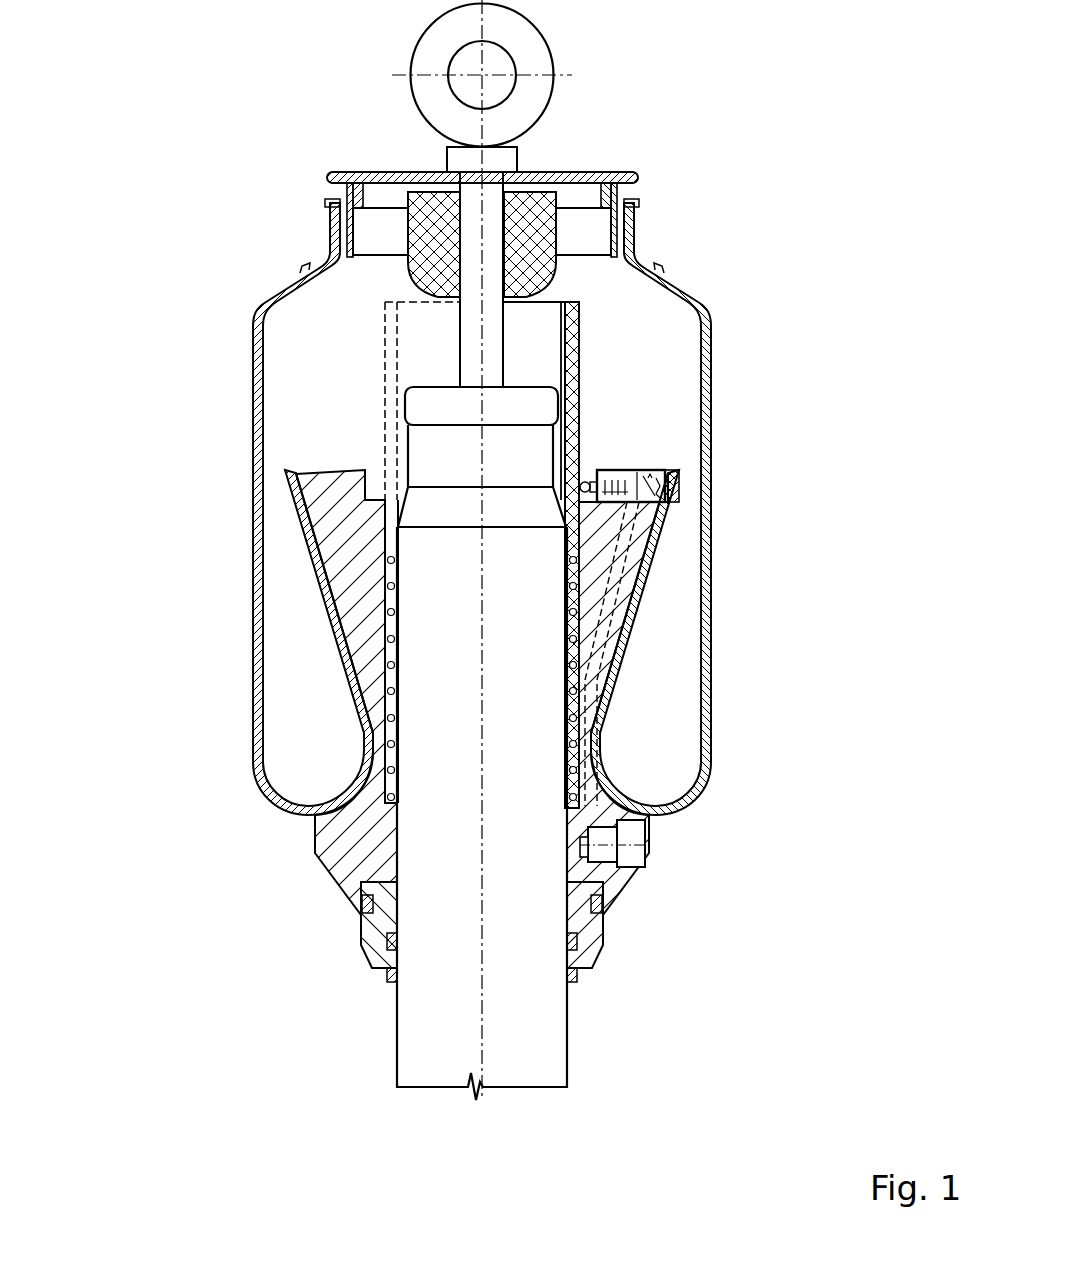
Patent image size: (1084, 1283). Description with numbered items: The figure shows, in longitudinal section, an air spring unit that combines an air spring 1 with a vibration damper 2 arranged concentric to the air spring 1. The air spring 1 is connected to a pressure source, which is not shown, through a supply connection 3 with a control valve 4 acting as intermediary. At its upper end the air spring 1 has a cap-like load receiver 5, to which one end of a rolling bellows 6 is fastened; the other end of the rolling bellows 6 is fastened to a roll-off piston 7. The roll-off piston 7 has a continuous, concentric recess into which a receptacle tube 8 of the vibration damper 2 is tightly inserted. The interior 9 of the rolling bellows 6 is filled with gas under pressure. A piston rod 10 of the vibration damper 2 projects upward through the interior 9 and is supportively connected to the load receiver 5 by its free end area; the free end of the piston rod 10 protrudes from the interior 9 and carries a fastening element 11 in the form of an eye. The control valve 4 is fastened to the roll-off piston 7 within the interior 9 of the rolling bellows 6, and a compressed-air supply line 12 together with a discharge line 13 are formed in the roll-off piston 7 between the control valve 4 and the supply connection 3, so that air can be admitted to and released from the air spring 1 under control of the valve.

The air spring 1 is at (737, 472).
The vibration damper 2 is at (528, 1018).
The supply connection 3 is at (648, 855).
The control valve 4 is at (643, 472).
The load receiver 5 is at (583, 174).
The rolling bellows 6 is at (711, 703).
The roll-off piston 7 is at (327, 837).
The receptacle tube 8 is at (395, 1022).
The interior 9 is at (303, 388).
The piston rod 10 is at (470, 343).
The fastening element 11 is at (438, 43).
The compressed-air supply line 12 is at (608, 568).
The discharge line 13 is at (612, 605).